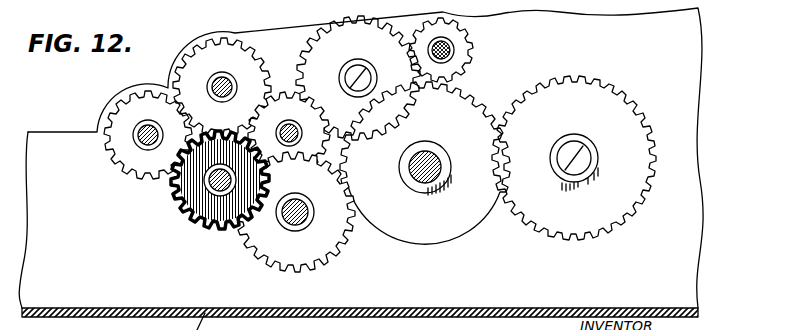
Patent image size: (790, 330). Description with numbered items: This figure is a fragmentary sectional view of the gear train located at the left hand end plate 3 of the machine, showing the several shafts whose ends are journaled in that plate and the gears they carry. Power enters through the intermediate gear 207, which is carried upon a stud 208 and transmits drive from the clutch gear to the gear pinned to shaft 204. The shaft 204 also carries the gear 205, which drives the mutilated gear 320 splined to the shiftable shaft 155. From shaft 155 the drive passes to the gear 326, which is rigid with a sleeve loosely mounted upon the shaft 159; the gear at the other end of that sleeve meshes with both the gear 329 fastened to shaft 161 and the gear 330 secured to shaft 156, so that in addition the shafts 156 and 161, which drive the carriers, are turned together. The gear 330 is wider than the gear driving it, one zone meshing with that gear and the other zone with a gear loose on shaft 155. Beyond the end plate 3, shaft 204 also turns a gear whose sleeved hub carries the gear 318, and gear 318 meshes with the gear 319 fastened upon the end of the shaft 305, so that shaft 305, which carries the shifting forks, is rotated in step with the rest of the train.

The left hand end plate 3 is at (361, 169).
The gear 329 is at (108, 140).
The shaft 161 is at (138, 147).
The shaft 305 is at (222, 78).
The gear 319 is at (250, 72).
The gear 330 is at (289, 133).
The shaft 156 is at (303, 135).
The mutilated gear 320 is at (295, 212).
The shaft 155 is at (290, 222).
The gear 205 is at (425, 163).
The shaft 204 is at (412, 182).
The intermediate gear 207 is at (605, 105).
The stud 208 is at (581, 168).
The gear 318 is at (176, 192).
The gear 326 is at (203, 227).
The shaft 159 is at (212, 184).